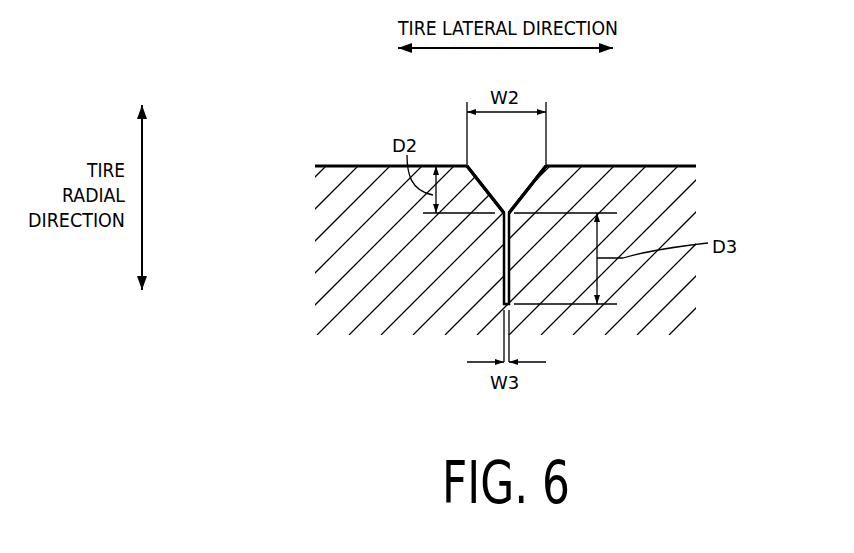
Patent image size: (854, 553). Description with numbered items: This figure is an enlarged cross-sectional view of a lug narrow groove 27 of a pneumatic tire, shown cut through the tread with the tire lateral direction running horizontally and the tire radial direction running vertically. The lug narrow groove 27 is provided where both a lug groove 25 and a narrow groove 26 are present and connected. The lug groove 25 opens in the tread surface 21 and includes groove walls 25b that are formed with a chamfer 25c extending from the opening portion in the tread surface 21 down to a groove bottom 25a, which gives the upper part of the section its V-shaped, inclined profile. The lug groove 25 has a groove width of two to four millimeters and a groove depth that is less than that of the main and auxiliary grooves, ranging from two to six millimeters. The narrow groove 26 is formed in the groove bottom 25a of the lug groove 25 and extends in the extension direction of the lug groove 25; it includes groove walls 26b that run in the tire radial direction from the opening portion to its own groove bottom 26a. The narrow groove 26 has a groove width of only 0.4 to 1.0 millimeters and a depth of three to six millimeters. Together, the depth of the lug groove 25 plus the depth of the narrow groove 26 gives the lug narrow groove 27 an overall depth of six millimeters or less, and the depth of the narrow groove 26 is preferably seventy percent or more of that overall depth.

The tread surface 21 is at (662, 162).
The lug groove 25 is at (500, 153).
The groove bottom 25a is at (503, 200).
The groove walls 25b is at (533, 182).
The chamfer 25c is at (483, 178).
The narrow groove 26 is at (503, 262).
The groove bottom 26a is at (503, 303).
The groove walls 26b is at (506, 263).
The lug narrow groove 27 is at (602, 122).